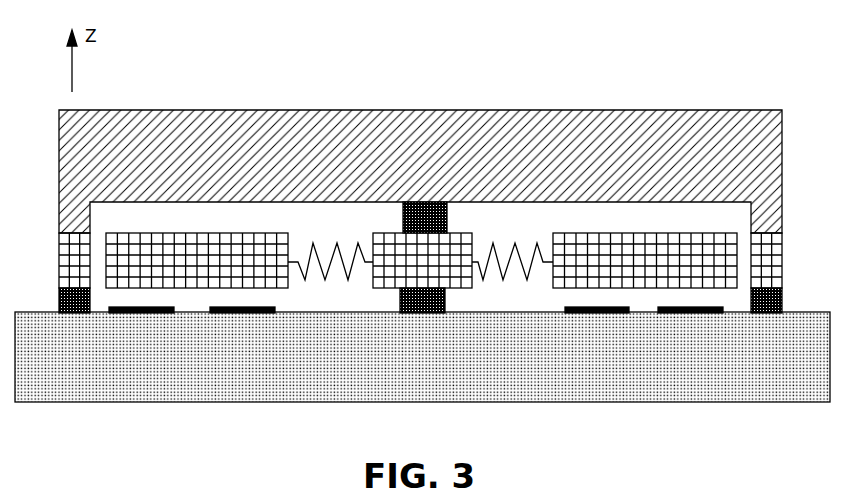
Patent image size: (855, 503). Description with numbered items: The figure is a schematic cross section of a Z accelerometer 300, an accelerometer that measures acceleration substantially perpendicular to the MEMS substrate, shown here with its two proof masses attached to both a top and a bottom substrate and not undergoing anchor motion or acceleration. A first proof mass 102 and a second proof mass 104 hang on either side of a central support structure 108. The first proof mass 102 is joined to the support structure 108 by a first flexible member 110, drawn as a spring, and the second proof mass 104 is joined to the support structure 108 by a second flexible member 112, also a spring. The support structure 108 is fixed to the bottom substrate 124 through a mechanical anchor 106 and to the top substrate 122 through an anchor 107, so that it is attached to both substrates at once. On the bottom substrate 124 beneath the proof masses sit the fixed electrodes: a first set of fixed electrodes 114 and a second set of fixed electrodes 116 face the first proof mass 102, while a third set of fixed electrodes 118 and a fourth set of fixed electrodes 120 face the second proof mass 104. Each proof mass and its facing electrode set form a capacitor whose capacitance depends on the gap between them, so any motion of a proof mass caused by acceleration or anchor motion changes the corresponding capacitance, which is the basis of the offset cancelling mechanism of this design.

The first proof mass 102 is at (197, 233).
The second proof mass 104 is at (640, 233).
The mechanical anchor 106 is at (400, 300).
The anchor 107 is at (403, 214).
The support structure 108 is at (452, 282).
The first flexible member 110 is at (337, 243).
The second flexible member 112 is at (527, 243).
The first set of fixed electrodes 114 is at (148, 313).
The second set of fixed electrodes 116 is at (246, 313).
The third set of fixed electrodes 118 is at (595, 313).
The fourth set of fixed electrodes 120 is at (683, 313).
The top substrate 122 is at (323, 125).
The bottom substrate 124 is at (347, 385).
The MEMS device 300 is at (688, 100).